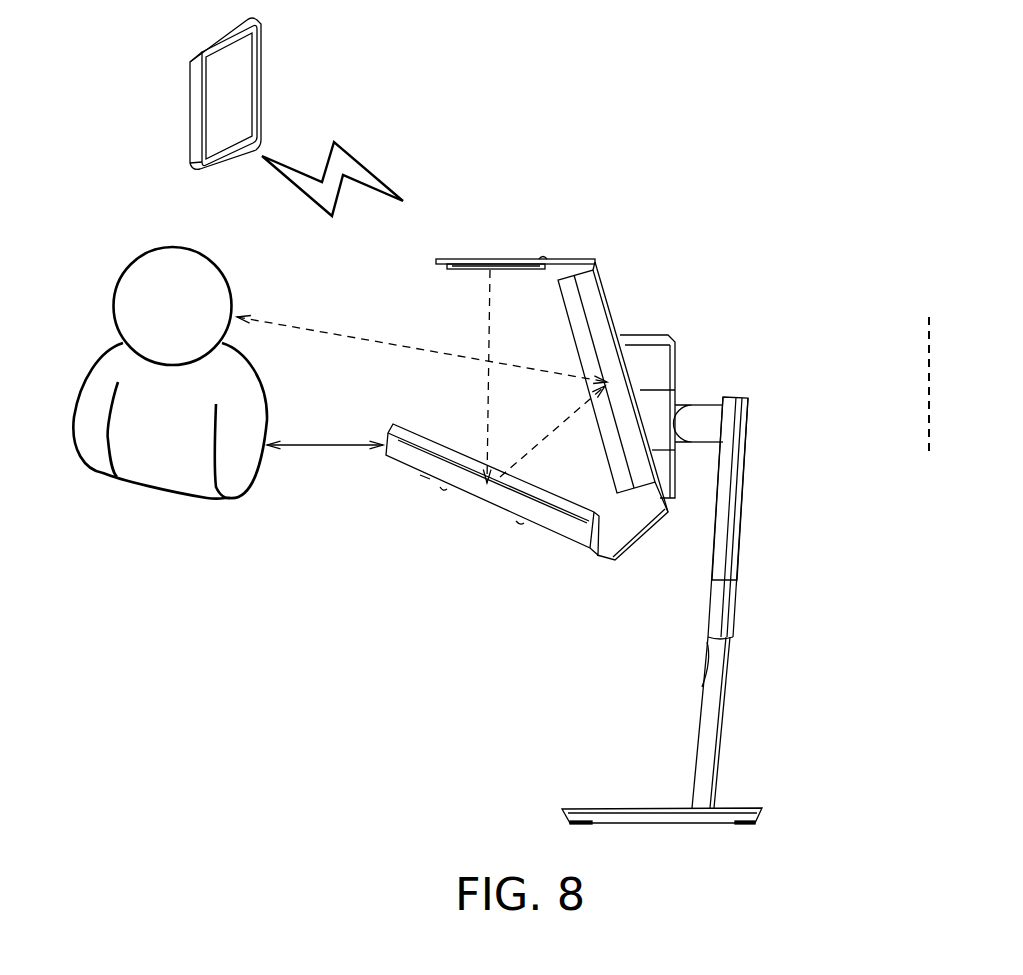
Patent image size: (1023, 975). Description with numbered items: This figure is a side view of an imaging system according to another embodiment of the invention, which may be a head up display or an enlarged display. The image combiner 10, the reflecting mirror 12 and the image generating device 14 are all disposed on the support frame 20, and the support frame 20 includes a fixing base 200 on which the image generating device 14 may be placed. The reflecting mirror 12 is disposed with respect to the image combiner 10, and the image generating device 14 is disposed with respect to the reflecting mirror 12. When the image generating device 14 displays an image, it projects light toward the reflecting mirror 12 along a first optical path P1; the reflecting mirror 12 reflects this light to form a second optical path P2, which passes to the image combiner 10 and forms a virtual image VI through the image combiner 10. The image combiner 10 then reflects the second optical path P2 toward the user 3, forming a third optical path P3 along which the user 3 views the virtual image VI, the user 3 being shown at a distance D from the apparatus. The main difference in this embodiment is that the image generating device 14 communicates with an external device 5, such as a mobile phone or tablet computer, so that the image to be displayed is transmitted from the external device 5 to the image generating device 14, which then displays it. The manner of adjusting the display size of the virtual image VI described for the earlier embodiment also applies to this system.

The user 3 is at (203, 254).
The external device 5 is at (262, 92).
The image combiner 10 is at (610, 303).
The reflecting mirror 12 is at (477, 493).
The image generating device 14 is at (463, 270).
The support frame 20 is at (742, 562).
The fixing base 200 is at (472, 259).
The first optical path P1 is at (487, 423).
The second optical path P2 is at (548, 435).
The third optical path P3 is at (317, 330).
The distance D is at (325, 431).
The virtual image VI is at (930, 340).